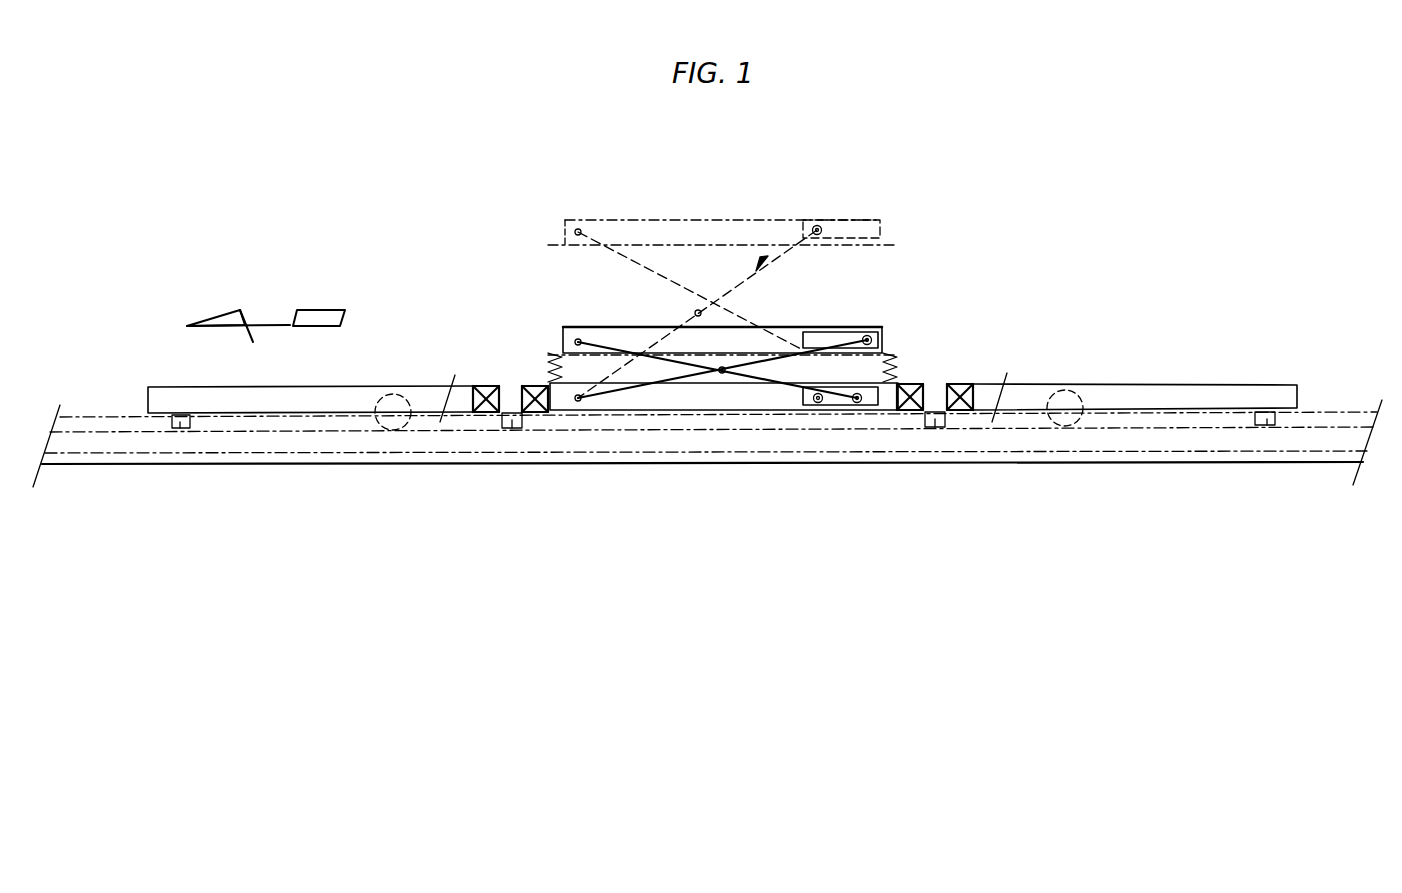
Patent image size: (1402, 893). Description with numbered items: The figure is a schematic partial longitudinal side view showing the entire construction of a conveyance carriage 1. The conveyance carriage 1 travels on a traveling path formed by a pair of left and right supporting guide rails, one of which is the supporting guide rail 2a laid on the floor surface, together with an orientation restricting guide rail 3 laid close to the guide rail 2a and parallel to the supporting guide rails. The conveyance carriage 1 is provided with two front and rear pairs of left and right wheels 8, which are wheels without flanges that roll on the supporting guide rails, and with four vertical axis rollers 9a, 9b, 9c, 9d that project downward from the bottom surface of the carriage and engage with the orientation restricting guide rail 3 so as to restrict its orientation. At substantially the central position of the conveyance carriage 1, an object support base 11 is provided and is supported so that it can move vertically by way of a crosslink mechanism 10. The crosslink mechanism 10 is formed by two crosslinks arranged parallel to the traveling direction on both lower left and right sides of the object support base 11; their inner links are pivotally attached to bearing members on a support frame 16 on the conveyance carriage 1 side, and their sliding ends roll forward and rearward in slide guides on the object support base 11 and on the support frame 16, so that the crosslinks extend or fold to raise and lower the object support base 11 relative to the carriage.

The conveyance carriage 1 is at (1180, 385).
The supporting guide rail 2a is at (253, 442).
The orientation restricting guide rail 3 is at (1238, 420).
The wheels 8 is at (393, 422).
The vertical axis roller 9a is at (180, 428).
The vertical axis roller 9b is at (512, 428).
The vertical axis roller 9c is at (935, 427).
The vertical axis roller 9d is at (1267, 425).
The crosslink mechanism 10 is at (743, 358).
The object support base 11 is at (653, 327).
The support frame 16 is at (690, 412).